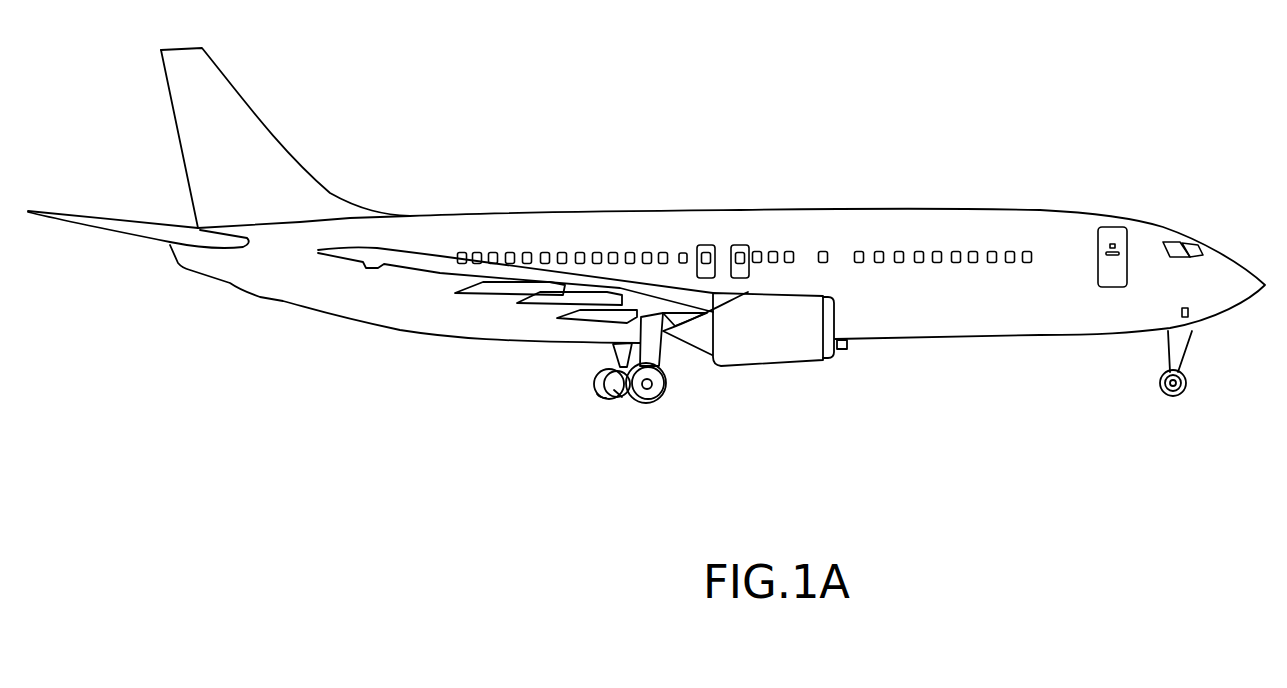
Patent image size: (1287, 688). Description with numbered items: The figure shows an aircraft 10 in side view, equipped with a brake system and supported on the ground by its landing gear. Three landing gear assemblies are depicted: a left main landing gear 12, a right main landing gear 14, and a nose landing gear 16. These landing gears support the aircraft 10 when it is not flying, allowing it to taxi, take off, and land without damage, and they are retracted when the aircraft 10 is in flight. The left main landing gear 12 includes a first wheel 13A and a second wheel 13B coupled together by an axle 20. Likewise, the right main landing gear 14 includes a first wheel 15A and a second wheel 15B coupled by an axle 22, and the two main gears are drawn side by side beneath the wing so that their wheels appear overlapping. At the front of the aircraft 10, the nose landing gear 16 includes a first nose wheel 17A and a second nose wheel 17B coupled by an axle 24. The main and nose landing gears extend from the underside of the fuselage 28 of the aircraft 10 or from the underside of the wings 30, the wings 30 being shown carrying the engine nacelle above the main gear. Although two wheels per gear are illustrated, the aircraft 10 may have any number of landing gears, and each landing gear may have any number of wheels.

The aircraft 10 is at (828, 107).
The left main landing gear 12 is at (603, 363).
The first wheel 13A is at (600, 370).
The second wheel 13B is at (603, 398).
The right main landing gear 14 is at (609, 408).
The first wheel 15A is at (667, 380).
The second wheel 15B is at (618, 403).
The nose landing gear 16 is at (1173, 389).
The first nose wheel 17A is at (1162, 383).
The second nose wheel 17B is at (1183, 385).
The axle 20 is at (607, 389).
The axle 22 is at (647, 384).
The axle 24 is at (1177, 395).
The fuselage 28 is at (1162, 331).
The wings 30 is at (713, 312).